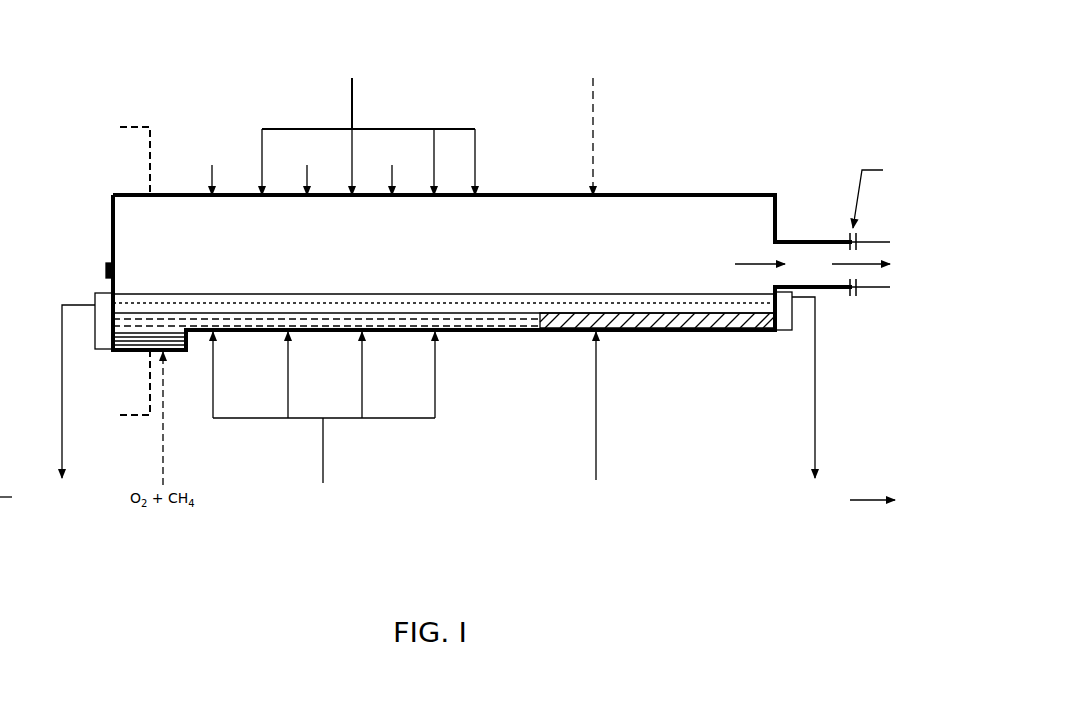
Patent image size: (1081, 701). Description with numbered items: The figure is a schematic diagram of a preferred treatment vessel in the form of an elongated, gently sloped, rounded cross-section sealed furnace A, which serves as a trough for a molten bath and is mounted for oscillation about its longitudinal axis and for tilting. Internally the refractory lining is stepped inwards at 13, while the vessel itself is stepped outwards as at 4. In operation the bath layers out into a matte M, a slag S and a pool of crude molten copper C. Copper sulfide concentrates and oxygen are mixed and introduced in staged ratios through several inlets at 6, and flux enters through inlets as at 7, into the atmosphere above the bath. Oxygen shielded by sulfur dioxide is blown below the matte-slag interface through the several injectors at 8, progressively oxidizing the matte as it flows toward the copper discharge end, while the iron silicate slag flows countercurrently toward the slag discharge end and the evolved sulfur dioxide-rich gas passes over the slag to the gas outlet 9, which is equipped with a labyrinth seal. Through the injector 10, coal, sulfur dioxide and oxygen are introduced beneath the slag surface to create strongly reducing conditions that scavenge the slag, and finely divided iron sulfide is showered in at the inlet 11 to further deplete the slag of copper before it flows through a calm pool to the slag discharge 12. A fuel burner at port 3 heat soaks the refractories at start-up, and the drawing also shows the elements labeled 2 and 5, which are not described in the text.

The furnace A is at (693, 195).
The burners 2 is at (125, 272).
The port 3 is at (108, 262).
The outward step 4 is at (195, 338).
The copper tap 5 is at (104, 345).
The inlets 6 is at (355, 120).
The flux inlets 7 is at (215, 190).
The injectors 8 is at (325, 470).
The gas outlet 9 is at (785, 248).
The injector 10 is at (597, 428).
The inlet 11 is at (597, 162).
The slag discharge 12 is at (783, 330).
The inward step 13 is at (553, 330).
The crude molten copper C is at (140, 351).
The matte M is at (455, 305).
The slag S is at (595, 303).